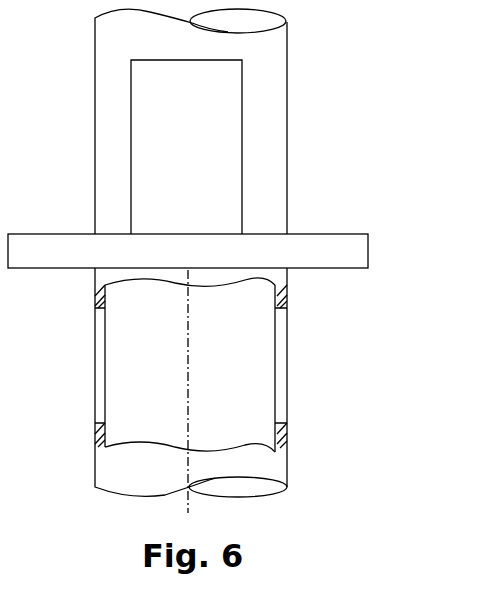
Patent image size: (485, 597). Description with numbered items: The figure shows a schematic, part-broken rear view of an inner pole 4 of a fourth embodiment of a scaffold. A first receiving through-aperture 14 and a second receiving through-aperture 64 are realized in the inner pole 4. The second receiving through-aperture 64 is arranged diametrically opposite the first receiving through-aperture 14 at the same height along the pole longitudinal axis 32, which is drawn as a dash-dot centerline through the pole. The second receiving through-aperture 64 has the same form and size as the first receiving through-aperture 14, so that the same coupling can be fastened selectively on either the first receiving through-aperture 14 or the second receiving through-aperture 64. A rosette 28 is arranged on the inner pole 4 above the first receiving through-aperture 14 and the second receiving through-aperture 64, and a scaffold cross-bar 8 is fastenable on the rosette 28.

The inner pole 4 is at (260, 146).
The scaffold cross-bar 8 is at (143, 147).
The rosette 28 is at (320, 251).
The first receiving through-aperture 14 is at (285, 357).
The second receiving through-aperture 64 is at (100, 357).
The pole longitudinal axis 32 is at (190, 423).